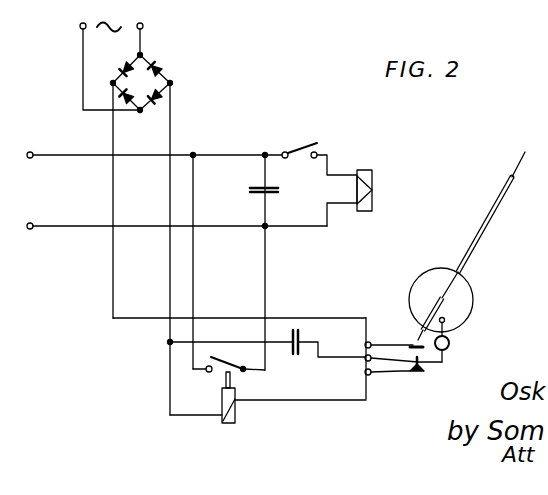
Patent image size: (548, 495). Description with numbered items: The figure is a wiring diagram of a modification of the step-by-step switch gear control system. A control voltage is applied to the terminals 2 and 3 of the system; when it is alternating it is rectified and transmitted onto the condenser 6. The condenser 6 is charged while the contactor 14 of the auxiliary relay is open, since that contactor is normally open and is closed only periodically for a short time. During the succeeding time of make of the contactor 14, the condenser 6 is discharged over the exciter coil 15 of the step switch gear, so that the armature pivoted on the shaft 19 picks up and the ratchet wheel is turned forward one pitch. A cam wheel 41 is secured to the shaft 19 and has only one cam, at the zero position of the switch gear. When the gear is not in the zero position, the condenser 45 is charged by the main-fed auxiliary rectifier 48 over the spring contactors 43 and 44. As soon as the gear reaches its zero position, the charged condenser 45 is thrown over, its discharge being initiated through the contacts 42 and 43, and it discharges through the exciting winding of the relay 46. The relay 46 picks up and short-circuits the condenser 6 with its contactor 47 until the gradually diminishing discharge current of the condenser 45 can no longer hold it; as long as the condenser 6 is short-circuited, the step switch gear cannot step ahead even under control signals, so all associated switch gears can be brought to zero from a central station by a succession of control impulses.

The terminal 2 is at (154, 145).
The terminal 3 is at (177, 217).
The condenser 6 is at (262, 189).
The contactor 14 is at (318, 148).
The exciter coil 15 is at (374, 189).
The shaft 19 is at (498, 210).
The cam wheel 41 is at (474, 296).
The contact 42 is at (420, 373).
The spring contactor 43 is at (398, 362).
The spring contactor 44 is at (381, 344).
The condenser 45 is at (291, 349).
The relay 46 is at (237, 414).
The contactor 47 is at (219, 358).
The auxiliary rectifier 48 is at (143, 82).